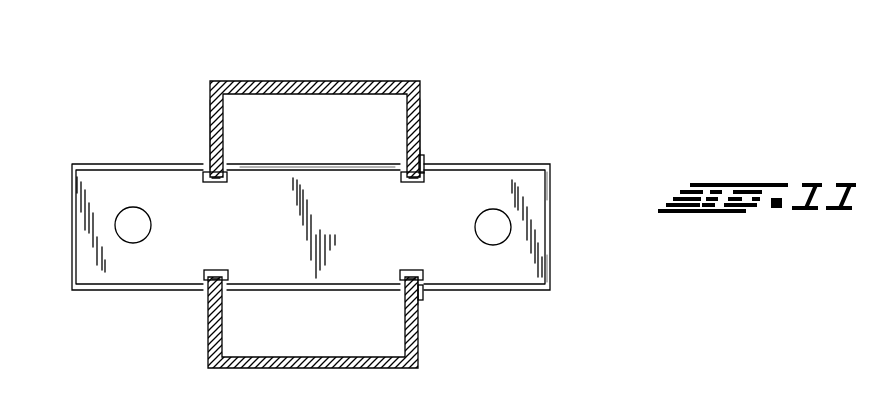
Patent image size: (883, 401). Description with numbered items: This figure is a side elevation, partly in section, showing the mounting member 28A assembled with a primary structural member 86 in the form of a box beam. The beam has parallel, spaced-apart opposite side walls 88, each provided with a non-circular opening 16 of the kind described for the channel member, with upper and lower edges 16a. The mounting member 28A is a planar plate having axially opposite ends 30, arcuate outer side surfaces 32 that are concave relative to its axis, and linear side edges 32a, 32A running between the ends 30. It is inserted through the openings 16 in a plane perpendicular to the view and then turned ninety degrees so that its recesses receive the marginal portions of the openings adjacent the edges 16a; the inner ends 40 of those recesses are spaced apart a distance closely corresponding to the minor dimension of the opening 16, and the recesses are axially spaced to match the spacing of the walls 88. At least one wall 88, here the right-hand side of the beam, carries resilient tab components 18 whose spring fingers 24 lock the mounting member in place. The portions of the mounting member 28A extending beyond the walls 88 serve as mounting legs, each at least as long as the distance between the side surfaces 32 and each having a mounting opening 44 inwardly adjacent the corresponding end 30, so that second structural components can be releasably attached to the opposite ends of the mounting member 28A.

The non-circular opening 16 is at (397, 298).
The ends of the opening 16a is at (217, 183).
The tab components 18 is at (430, 160).
The spring fingers 24 is at (428, 168).
The mounting member 28A is at (157, 308).
The axially opposite ends 30 is at (73, 217).
The arcuate outer side surfaces 32 is at (497, 165).
The linear side edges 32a is at (538, 166).
The linear side edge 32A is at (538, 290).
The inner ends of recesses 40 is at (223, 183).
The hole 44 is at (122, 232).
The primary structural member 86 is at (270, 73).
The side walls 88 is at (210, 122).